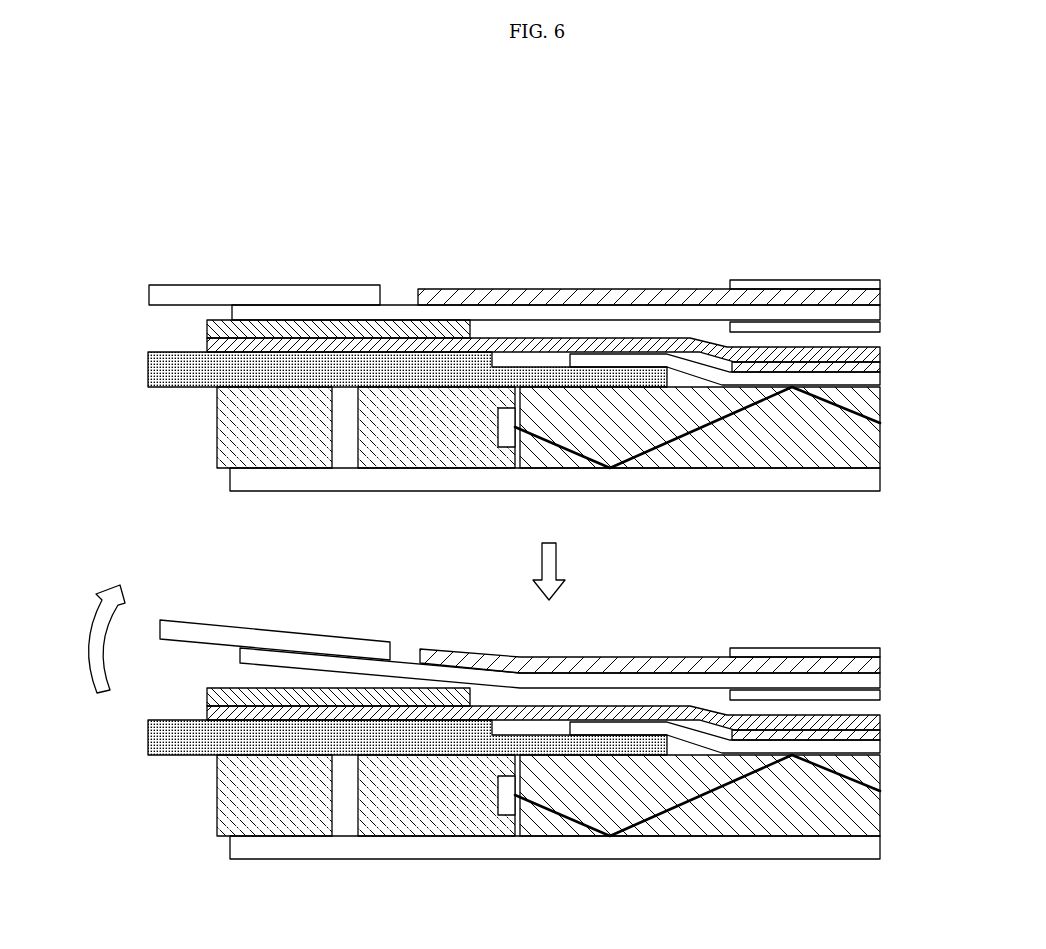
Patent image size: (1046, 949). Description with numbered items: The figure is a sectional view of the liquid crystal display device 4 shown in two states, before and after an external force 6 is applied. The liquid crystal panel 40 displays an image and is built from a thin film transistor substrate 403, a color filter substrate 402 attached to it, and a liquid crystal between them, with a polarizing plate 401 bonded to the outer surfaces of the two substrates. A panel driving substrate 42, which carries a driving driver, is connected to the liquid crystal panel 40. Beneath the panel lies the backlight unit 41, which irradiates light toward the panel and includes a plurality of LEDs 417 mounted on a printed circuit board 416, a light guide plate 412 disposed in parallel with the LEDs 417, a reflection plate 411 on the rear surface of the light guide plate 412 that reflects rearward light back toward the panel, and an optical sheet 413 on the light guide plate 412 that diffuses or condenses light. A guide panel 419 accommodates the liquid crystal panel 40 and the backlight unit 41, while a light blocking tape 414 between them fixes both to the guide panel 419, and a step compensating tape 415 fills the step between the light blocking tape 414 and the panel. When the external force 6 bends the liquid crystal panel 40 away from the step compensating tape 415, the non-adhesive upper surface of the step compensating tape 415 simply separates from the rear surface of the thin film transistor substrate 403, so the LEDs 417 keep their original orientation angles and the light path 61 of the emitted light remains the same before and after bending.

The liquid crystal display device 4 is at (893, 270).
The external force 6 is at (90, 645).
The liquid crystal panel 40 is at (884, 280).
The backlight unit 41 is at (931, 360).
The panel driving substrate 42 is at (262, 285).
The light path 61 is at (562, 452).
The polarizing plate 401 is at (818, 328).
The color filter substrate 402 is at (577, 289).
The thin film transistor substrate 403 is at (398, 306).
The reflection plate 411 is at (271, 480).
The light guide plate 412 is at (662, 462).
The optical sheet 413 is at (884, 360).
The light blocking tape 414 is at (207, 346).
The step compensating tape 415 is at (207, 329).
The printed circuit board 416 is at (148, 370).
The LEDs 417 is at (383, 465).
The guide panel 419 is at (217, 432).